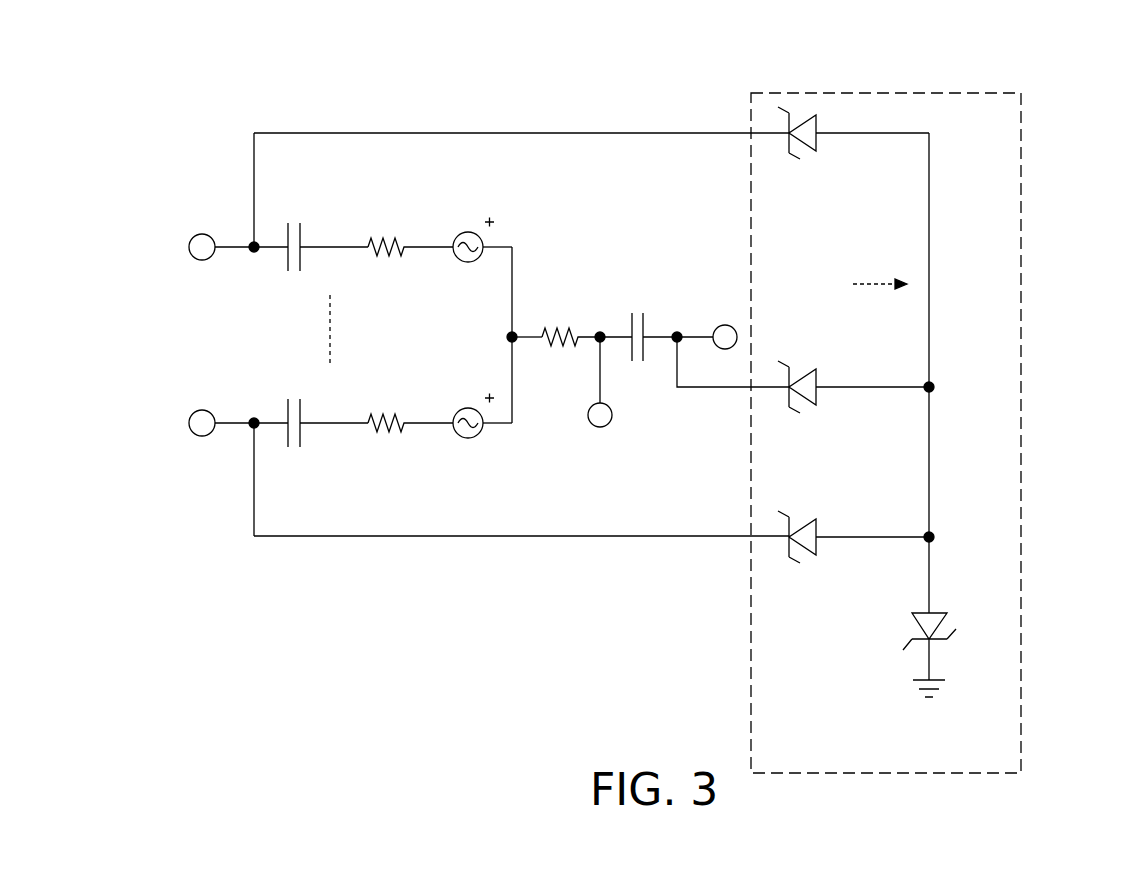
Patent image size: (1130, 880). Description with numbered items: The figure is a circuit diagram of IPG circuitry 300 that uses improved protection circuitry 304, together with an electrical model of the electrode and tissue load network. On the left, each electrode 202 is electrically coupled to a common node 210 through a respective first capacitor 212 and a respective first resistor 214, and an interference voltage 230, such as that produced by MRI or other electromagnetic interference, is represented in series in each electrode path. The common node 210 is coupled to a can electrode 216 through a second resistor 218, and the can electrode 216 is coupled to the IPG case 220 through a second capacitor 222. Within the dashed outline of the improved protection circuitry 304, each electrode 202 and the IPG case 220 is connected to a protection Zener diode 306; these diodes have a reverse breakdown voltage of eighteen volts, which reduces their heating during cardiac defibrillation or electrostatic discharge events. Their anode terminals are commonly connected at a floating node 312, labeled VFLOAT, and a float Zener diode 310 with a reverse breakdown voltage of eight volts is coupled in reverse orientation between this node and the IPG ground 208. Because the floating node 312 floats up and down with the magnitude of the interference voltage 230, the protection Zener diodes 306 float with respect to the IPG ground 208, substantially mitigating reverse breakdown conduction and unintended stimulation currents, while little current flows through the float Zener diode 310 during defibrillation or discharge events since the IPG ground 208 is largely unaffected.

The IPG circuitry 300 is at (590, 91).
The improved protection circuitry 304 is at (1025, 152).
The electrode 202 is at (193, 237).
The first capacitor 212 is at (300, 222).
The first resistor 214 is at (388, 237).
The interference voltage 230 is at (461, 233).
The common node 210 is at (514, 333).
The second resistor 218 is at (545, 350).
The can electrode 216 is at (613, 418).
The second capacitor 222 is at (643, 314).
The IPG case 220 is at (737, 331).
The protection Zener diode 306 is at (817, 146).
The floating node 312 is at (930, 246).
The float Zener diode 310 is at (926, 605).
The IPG ground 208 is at (934, 676).